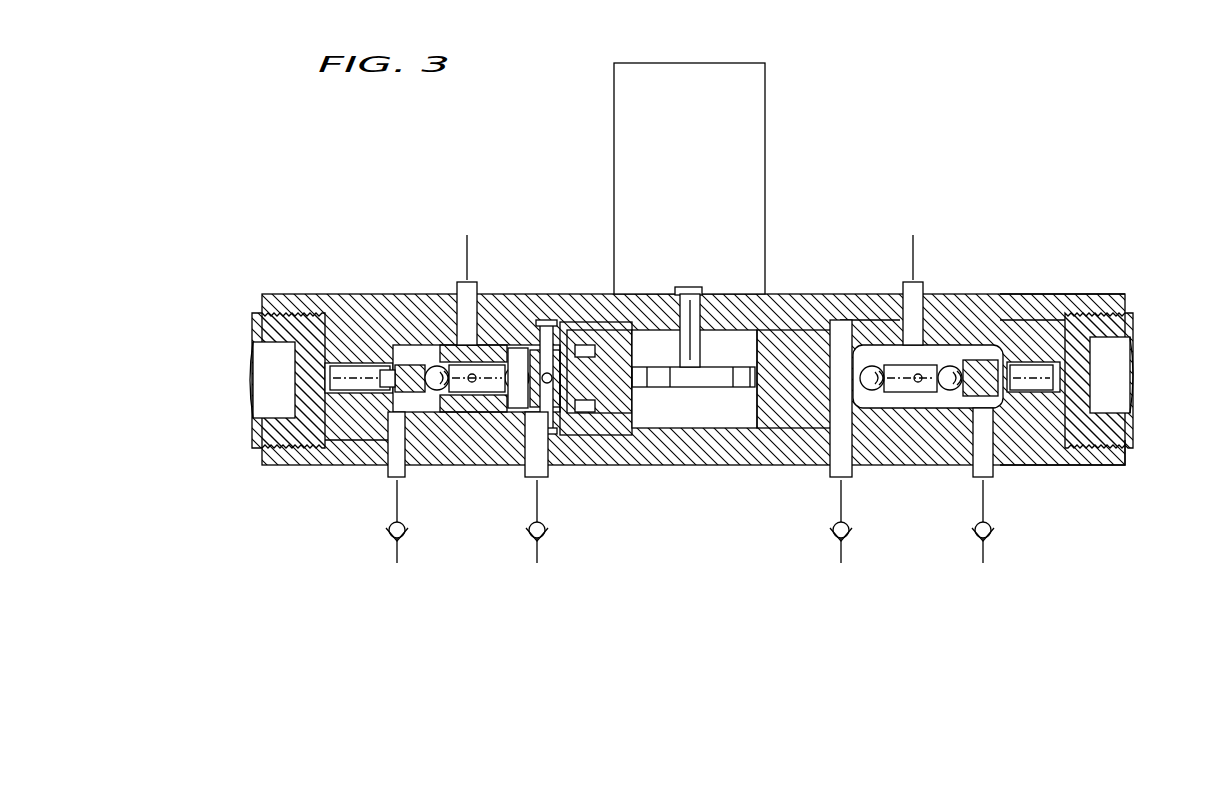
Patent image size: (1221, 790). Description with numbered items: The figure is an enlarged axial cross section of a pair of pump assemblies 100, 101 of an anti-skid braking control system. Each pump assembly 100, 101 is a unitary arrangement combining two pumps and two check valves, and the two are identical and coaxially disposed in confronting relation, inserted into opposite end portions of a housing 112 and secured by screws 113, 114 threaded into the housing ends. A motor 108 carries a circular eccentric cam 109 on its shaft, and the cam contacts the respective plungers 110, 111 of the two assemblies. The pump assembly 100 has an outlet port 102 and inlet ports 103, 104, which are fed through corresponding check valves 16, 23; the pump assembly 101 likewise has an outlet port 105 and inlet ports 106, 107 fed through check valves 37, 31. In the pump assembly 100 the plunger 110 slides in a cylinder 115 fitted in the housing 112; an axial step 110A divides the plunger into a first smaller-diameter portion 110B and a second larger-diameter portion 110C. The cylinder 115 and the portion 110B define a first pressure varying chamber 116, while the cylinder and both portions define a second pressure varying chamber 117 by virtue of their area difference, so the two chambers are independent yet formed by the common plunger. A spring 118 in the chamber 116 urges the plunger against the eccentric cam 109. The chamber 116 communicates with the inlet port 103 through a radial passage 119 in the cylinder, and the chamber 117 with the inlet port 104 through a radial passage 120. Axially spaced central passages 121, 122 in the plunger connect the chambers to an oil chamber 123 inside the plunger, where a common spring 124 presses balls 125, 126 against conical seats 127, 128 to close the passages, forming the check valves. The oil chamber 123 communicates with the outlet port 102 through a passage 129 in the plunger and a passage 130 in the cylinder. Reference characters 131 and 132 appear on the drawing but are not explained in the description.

The pump assembly 100 is at (288, 473).
The pump assembly 101 is at (1062, 472).
The outlet port 102 is at (463, 290).
The inlet port 103 is at (393, 477).
The inlet port 104 is at (540, 477).
The outlet port 105 is at (913, 292).
The inlet port 106 is at (837, 470).
The inlet port 107 is at (980, 475).
The motor 108 is at (752, 102).
The eccentric cam 109 is at (705, 388).
The plunger 110 is at (612, 405).
The axial step 110A is at (610, 405).
The first smaller-diameter portion 110B is at (450, 400).
The second larger-diameter portion 110C is at (622, 430).
The plunger 111 is at (760, 410).
The housing 112 is at (1030, 307).
The screw 113 is at (263, 432).
The screw 114 is at (1120, 427).
The cylinder 115 is at (296, 340).
The first pressure varying chamber 116 is at (330, 465).
The second pressure varying chamber 117 is at (566, 330).
The spring 118 is at (340, 365).
The passage 119 is at (363, 468).
The passage 120 is at (530, 400).
The passage 121 is at (390, 330).
The passage 122 is at (590, 330).
The oil chamber 123 is at (480, 400).
The common spring 124 is at (462, 400).
The ball 125 is at (423, 330).
The ball 126 is at (522, 330).
The conical seat 127 is at (425, 405).
The conical seat 128 is at (505, 400).
The passage 129 is at (507, 330).
The passage 130 is at (485, 330).
The right adjusting rod 131 is at (1048, 378).
The right sleeve 132 is at (865, 330).
The check valve 16 is at (397, 540).
The check valve 23 is at (537, 540).
The check valve 37 is at (853, 537).
The check valve 31 is at (995, 537).